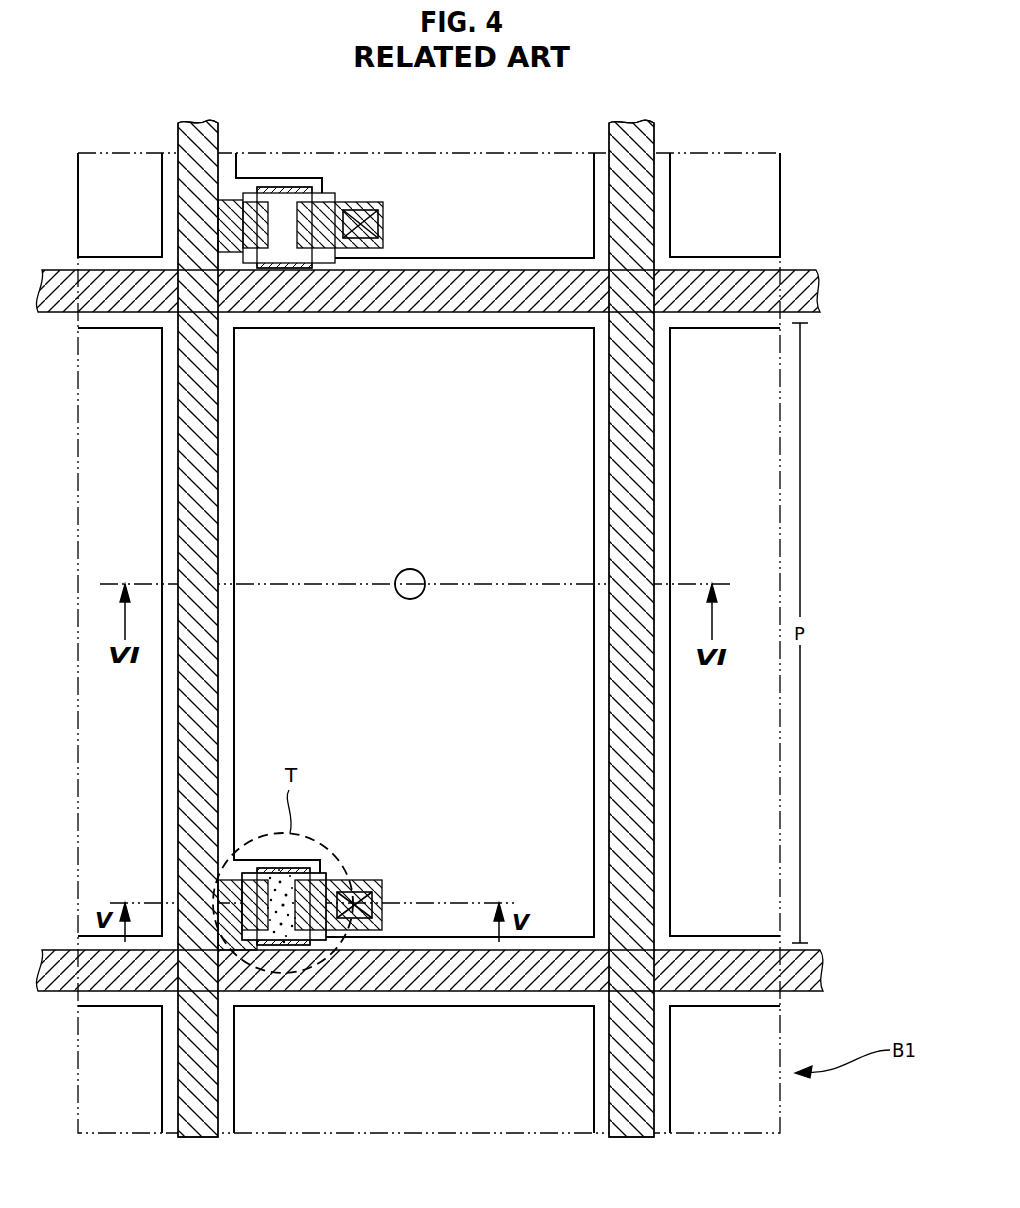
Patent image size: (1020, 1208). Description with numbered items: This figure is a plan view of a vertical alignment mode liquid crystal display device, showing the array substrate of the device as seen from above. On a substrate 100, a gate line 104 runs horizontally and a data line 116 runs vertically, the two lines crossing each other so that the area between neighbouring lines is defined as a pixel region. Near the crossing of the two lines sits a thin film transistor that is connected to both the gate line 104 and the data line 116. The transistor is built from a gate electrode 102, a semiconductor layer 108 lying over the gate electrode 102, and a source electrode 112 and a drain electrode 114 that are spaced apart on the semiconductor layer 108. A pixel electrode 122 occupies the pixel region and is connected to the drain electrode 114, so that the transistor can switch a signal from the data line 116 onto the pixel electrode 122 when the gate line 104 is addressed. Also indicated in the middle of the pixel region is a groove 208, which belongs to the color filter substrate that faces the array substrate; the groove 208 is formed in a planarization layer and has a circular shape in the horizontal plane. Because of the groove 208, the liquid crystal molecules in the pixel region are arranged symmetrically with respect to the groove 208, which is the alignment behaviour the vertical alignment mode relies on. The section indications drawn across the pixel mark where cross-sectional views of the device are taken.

The substrate 100 is at (745, 1103).
The gate electrode 102 is at (285, 886).
The gate line 104 is at (717, 950).
The semiconductor layer 108 is at (290, 947).
The source electrode 112 is at (245, 856).
The drain electrode 114 is at (380, 880).
The data line 116 is at (178, 430).
The pixel electrode 122 is at (472, 340).
The groove 208 is at (413, 568).